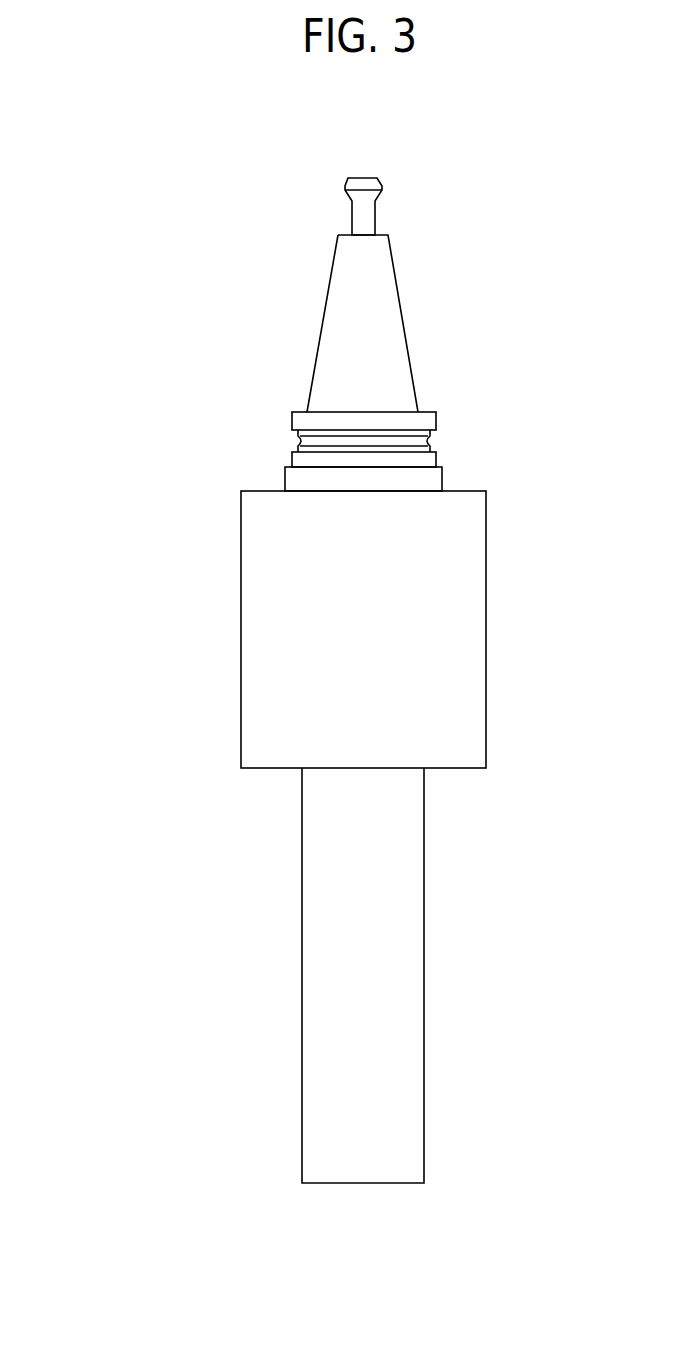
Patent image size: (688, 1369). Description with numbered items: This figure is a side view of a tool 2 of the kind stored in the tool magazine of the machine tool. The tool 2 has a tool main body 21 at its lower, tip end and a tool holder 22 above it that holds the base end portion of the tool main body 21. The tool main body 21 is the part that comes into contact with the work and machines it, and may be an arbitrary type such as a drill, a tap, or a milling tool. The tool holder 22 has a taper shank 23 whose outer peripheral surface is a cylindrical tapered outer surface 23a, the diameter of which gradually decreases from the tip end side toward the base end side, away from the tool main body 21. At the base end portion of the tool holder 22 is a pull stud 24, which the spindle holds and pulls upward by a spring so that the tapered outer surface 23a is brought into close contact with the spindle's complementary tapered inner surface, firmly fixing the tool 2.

The tool 2 is at (127, 198).
The tool main body 21 is at (424, 943).
The tool holder 22 is at (525, 172).
The taper shank 23 is at (390, 312).
The tapered outer surface 23a is at (327, 300).
The pull stud 24 is at (370, 225).